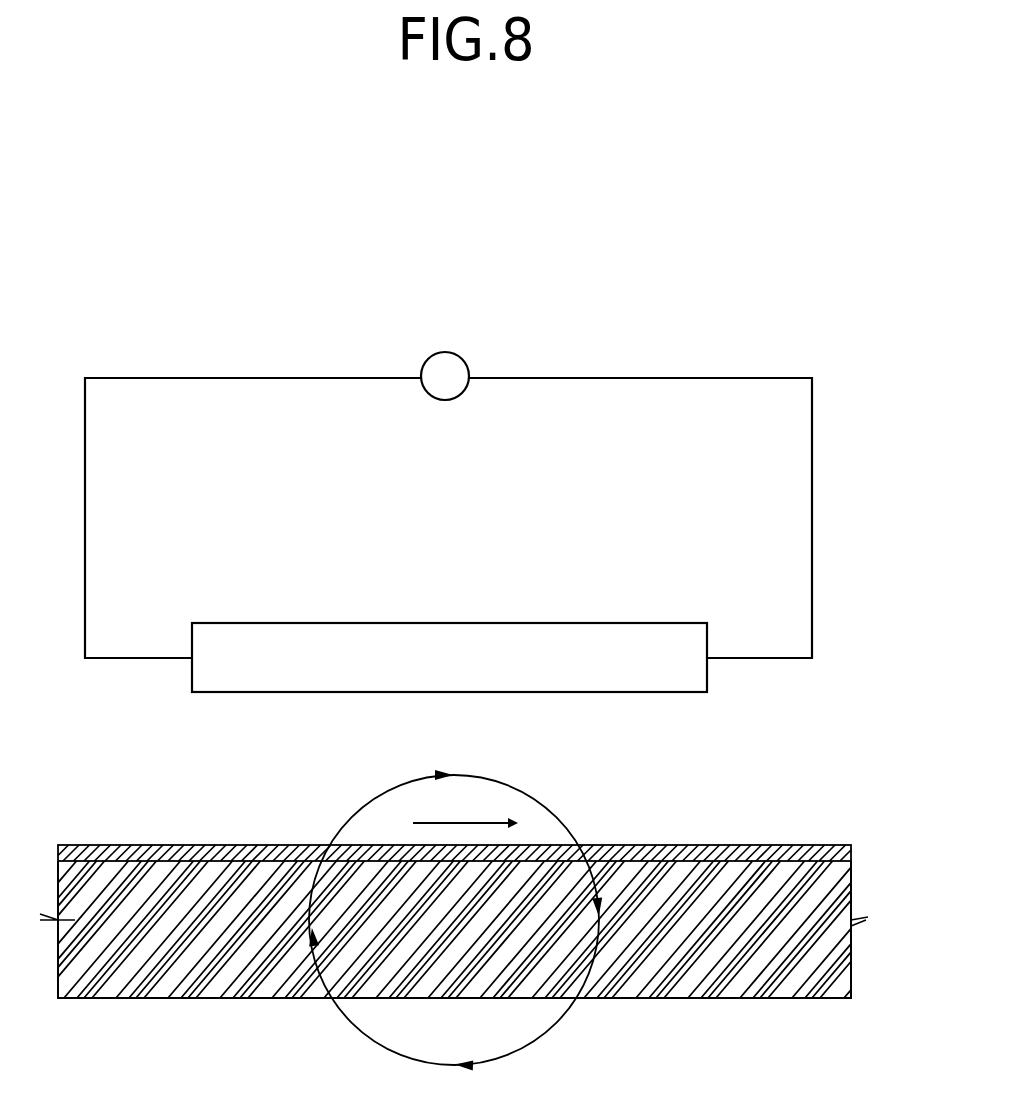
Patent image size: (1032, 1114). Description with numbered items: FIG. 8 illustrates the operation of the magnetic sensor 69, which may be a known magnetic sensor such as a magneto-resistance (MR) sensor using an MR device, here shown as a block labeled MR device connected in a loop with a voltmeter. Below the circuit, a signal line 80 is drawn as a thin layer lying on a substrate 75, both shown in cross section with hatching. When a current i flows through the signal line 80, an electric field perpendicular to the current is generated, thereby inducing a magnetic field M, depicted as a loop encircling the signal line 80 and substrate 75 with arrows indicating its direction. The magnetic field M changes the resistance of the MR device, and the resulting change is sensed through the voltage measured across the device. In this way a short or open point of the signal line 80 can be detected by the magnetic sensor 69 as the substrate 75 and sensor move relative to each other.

The magnetic sensor 69 is at (448, 522).
The signal line 80 is at (656, 843).
The substrate 75 is at (851, 876).
The magnetic field M is at (551, 812).
The current i is at (471, 823).